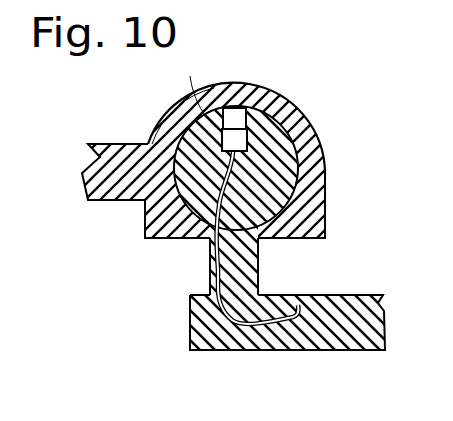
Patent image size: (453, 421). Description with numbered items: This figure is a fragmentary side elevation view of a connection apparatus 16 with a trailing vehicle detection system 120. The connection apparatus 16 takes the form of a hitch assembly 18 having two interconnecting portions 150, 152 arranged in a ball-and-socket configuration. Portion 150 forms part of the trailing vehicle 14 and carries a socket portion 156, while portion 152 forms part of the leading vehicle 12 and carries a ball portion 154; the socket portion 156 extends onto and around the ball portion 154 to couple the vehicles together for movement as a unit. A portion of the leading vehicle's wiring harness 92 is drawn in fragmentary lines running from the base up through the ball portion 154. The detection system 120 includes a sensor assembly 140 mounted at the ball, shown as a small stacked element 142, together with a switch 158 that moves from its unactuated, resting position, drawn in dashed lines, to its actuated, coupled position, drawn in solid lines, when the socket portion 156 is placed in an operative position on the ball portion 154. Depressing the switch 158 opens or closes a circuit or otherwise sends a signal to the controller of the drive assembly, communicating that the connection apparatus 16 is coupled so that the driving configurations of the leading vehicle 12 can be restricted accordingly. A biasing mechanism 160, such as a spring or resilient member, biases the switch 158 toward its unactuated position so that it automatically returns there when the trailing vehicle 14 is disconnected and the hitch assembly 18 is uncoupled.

The leading vehicle 12 is at (354, 275).
The trailing vehicle 14 is at (111, 216).
The connection apparatus 16 is at (94, 93).
The hitch assembly 18 is at (130, 105).
The wiring harness 92 is at (250, 330).
The detection system 120 is at (269, 146).
The sensor assembly 140 is at (278, 76).
The sensor 142 is at (248, 120).
The interconnecting portion 150 is at (116, 136).
The interconnecting portion 152 is at (202, 275).
The ball portion 154 is at (280, 234).
The socket portion 156 is at (291, 214).
The switch 158 is at (236, 82).
The biasing mechanism 160 is at (220, 133).